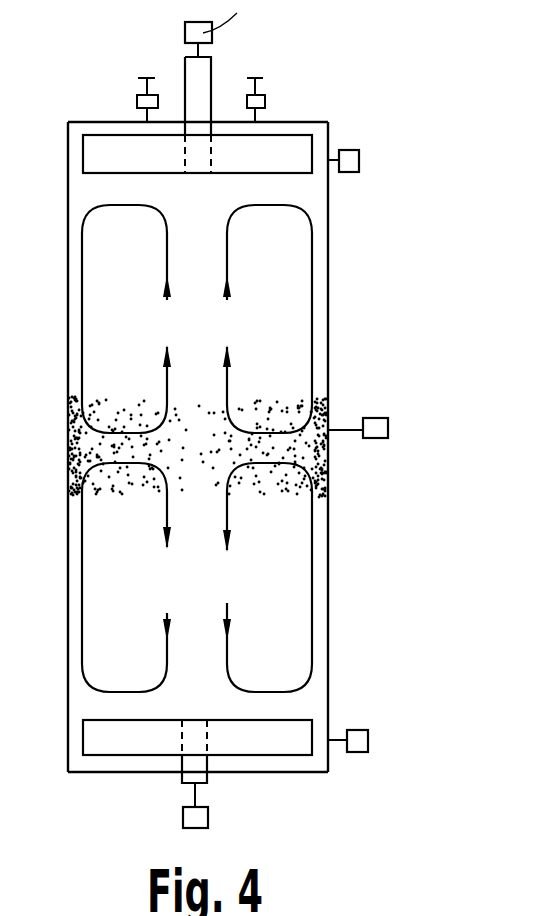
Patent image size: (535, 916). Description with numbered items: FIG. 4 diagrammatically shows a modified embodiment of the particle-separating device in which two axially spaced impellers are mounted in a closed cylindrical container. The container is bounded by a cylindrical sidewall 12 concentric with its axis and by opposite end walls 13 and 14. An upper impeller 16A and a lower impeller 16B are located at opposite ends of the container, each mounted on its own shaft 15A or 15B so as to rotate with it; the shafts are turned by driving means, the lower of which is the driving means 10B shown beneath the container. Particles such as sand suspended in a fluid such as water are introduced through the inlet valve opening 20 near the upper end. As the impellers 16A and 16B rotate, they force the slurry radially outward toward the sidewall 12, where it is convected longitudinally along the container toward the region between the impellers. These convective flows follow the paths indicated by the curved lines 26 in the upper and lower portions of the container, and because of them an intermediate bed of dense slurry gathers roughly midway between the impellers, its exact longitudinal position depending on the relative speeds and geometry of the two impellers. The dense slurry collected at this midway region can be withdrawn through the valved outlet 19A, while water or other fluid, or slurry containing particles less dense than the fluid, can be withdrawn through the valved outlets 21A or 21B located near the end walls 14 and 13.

The driving means 10B is at (208, 822).
The sidewall 12 is at (328, 600).
The end wall 13 is at (292, 772).
The end wall 14 is at (308, 122).
The shaft 15A is at (211, 72).
The shaft 15B is at (207, 778).
The impeller 16A is at (92, 152).
The impeller 16B is at (92, 741).
The valved outlet 19A is at (370, 417).
The inlet valve opening 20 is at (265, 97).
The valved outlet 21A is at (359, 160).
The valved outlet 21B is at (368, 740).
The curved lines 26 is at (312, 270).